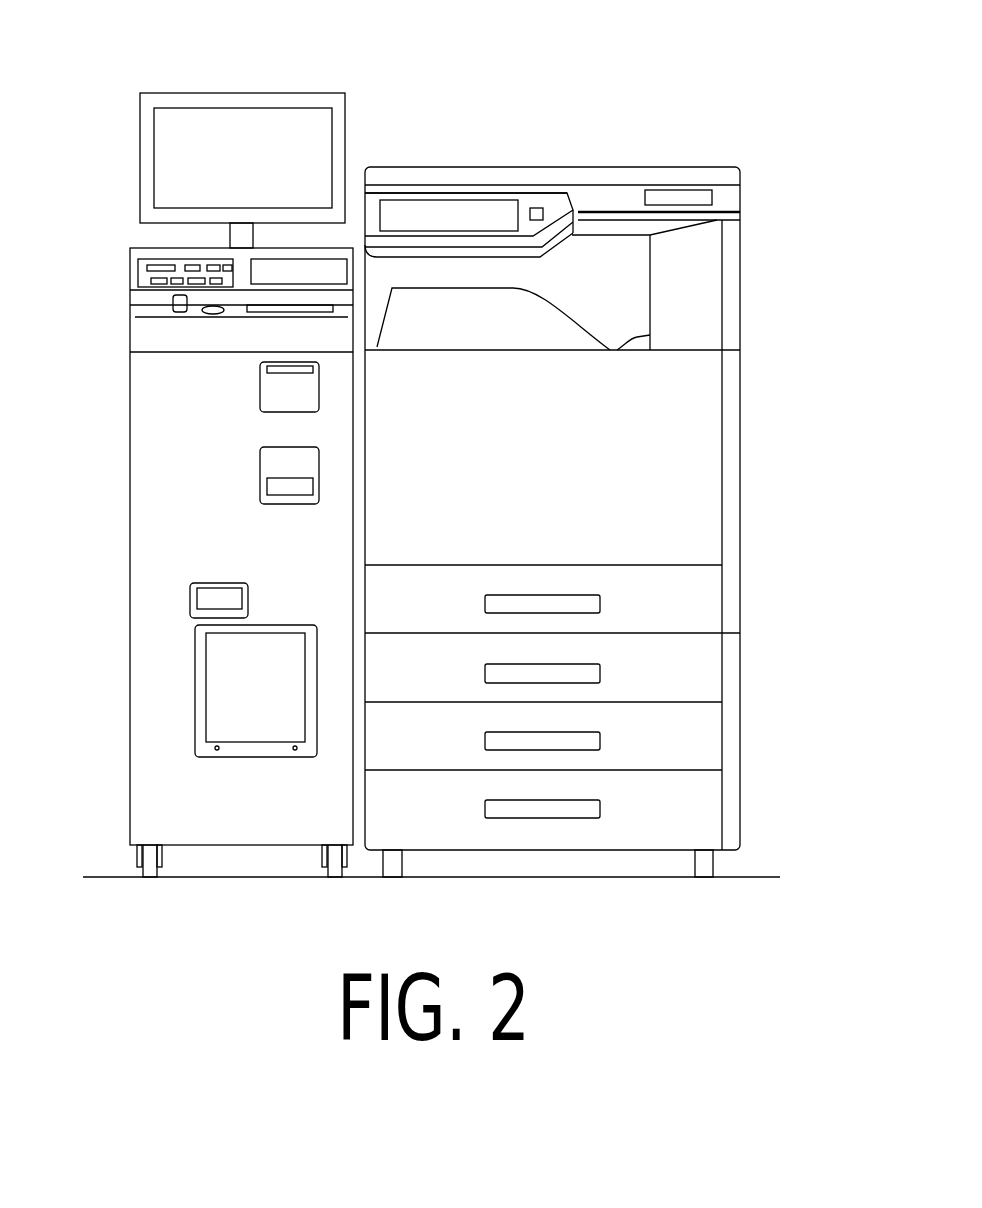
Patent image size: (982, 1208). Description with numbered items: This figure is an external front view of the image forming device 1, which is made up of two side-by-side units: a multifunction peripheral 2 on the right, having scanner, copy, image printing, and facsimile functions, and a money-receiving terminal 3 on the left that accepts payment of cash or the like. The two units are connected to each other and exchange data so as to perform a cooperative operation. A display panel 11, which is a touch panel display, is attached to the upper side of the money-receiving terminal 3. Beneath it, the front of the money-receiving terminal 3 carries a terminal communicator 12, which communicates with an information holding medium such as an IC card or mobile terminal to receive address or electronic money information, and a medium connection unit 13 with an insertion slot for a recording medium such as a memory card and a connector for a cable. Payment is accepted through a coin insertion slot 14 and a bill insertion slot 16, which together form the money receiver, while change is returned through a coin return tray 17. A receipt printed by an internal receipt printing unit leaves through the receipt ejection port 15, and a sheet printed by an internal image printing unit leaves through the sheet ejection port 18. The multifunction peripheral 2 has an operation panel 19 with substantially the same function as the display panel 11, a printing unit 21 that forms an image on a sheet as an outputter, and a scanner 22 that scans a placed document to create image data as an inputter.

The image forming device 1 is at (135, 33).
The multifunction peripheral 2 is at (642, 167).
The money-receiving terminal 3 is at (130, 548).
The display panel 11 is at (170, 153).
The terminal communicator 12 is at (297, 270).
The medium connection unit 13 is at (140, 260).
The coin insertion slot 14 is at (212, 315).
The receipt ejection port 15 is at (290, 373).
The bill insertion slot 16 is at (260, 485).
The coin return tray 17 is at (227, 588).
The sheet ejection port 18 is at (225, 690).
The operation panel 19 is at (458, 217).
The printing unit 21 is at (688, 440).
The scanner 22 is at (597, 202).